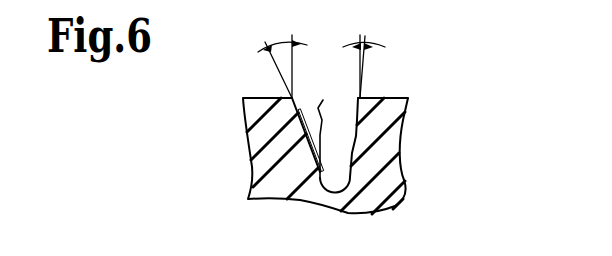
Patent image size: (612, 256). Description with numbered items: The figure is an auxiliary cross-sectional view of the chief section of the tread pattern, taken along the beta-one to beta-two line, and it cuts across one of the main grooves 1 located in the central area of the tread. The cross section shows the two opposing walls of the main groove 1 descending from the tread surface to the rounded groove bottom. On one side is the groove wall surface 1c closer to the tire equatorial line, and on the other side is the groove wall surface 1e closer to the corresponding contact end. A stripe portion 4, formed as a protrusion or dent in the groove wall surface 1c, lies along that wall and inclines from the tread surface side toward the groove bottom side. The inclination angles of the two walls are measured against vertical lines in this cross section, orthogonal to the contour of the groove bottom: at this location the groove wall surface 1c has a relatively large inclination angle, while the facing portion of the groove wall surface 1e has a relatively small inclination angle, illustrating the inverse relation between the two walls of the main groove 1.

The main groove 1 is at (342, 167).
The groove wall surface 1c is at (300, 127).
The groove wall surface 1e is at (357, 137).
The stripe portion 4 is at (313, 126).